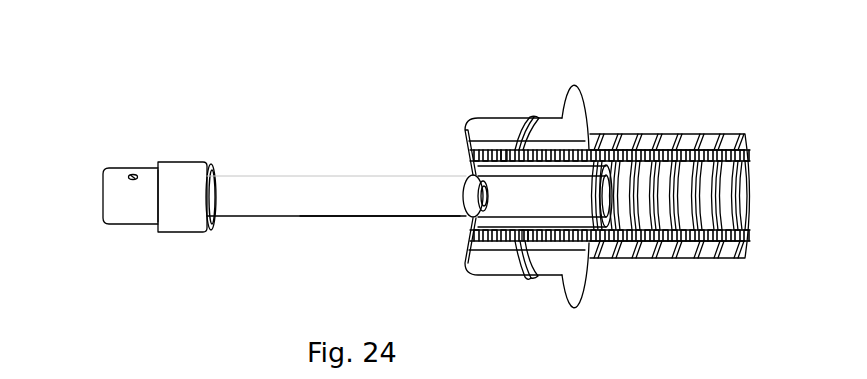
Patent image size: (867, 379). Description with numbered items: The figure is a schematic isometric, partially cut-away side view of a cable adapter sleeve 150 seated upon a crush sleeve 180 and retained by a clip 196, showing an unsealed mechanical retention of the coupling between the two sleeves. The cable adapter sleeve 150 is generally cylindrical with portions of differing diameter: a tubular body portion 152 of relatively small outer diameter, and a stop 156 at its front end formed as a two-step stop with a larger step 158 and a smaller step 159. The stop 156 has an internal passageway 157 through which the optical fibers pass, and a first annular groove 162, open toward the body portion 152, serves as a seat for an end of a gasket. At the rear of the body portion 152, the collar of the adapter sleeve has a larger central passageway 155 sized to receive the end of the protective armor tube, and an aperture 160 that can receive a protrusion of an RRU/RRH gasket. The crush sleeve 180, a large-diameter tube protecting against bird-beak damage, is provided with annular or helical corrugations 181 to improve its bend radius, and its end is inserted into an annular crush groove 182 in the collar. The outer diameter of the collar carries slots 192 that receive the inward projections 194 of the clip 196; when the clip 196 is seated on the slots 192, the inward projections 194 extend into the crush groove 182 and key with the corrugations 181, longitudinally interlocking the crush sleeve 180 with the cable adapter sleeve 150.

The cable adapter sleeve 150 is at (235, 186).
The body portion 152 is at (320, 193).
The central passageway 155 is at (557, 193).
The stop 156 is at (176, 172).
The internal passageway 157 is at (476, 201).
The larger step 158 is at (180, 222).
The smaller step 159 is at (116, 178).
The aperture 160 is at (133, 173).
The first annular groove 162 is at (212, 223).
The crush sleeve 180 is at (693, 135).
The corrugations 181 is at (525, 240).
The crush groove 182 is at (504, 153).
The slots 192 is at (520, 137).
The inward projections 194 is at (523, 265).
The clip 196 is at (530, 279).